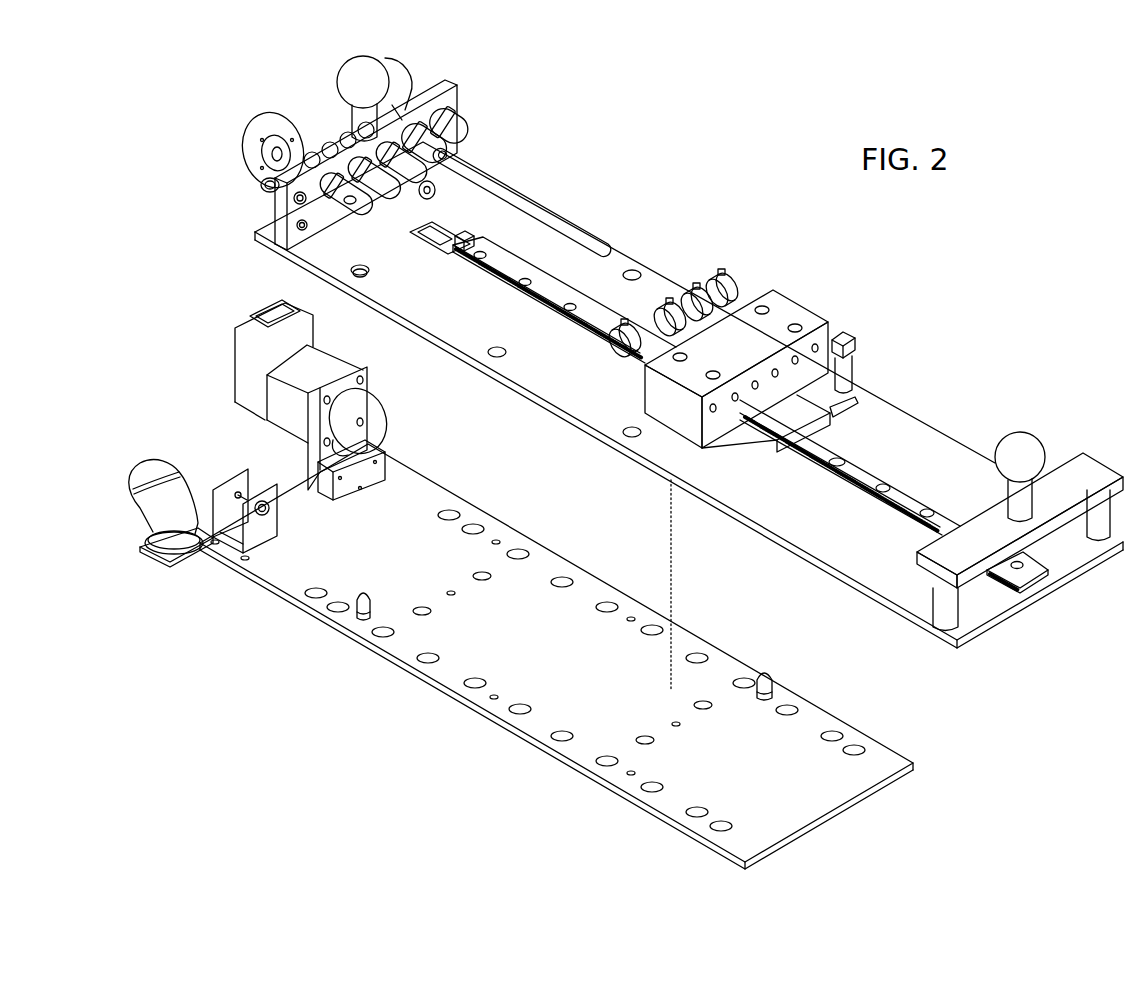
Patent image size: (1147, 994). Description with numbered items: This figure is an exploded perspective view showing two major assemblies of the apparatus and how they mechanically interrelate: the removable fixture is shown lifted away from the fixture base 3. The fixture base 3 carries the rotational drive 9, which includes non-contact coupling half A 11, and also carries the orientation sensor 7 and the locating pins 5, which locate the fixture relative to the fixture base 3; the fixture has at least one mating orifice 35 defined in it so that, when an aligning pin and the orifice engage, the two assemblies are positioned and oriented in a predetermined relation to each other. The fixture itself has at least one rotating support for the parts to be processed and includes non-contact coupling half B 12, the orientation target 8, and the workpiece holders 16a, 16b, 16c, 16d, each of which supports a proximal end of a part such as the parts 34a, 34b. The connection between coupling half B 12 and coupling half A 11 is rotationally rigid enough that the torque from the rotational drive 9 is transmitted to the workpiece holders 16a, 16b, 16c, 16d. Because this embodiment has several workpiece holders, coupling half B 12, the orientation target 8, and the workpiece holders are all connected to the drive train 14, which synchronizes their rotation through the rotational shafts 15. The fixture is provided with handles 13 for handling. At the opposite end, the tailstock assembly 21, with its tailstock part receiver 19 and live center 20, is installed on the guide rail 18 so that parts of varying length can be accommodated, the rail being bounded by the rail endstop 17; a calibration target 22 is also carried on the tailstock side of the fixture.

The fixture base 3 is at (556, 656).
The locating pins 5 is at (548, 646).
The orientation sensor 7 is at (169, 535).
The orientation target 8 is at (259, 134).
The rotational drive 9 is at (238, 361).
The non-contact coupling half A 11 is at (381, 433).
The non-contact coupling half B 12 is at (430, 65).
The handles 13 is at (657, 264).
The drive train 14 is at (401, 134).
The rotational shafts 15 is at (414, 142).
The workpiece holder 16a is at (475, 117).
The workpiece holder 16b is at (474, 127).
The workpiece holder 16c is at (216, 200).
The workpiece holder 16d is at (294, 249).
The rail endstop 17 is at (543, 262).
The guide rail 18 is at (621, 252).
The tailstock part receiver 19 is at (696, 293).
The live center 20 is at (756, 283).
The tailstock assembly 21 is at (767, 356).
The calibration target 22 is at (881, 340).
The part 34a is at (560, 188).
The part 34b is at (396, 273).
The mating orifice 35 is at (317, 356).